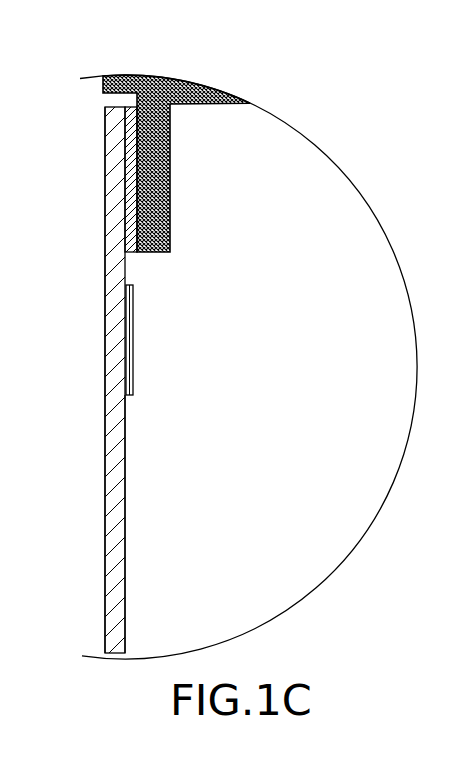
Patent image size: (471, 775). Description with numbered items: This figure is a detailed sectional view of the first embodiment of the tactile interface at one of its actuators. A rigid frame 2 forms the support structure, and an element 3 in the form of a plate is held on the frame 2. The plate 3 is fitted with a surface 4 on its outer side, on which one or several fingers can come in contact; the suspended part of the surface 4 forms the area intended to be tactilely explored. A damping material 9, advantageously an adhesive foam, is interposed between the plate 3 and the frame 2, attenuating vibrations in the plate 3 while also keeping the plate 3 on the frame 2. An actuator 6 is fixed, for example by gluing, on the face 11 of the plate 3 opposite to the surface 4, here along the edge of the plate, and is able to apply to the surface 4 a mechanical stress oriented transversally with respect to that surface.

The frame 2 is at (200, 82).
The element 3 is at (125, 477).
The surface 4 is at (107, 180).
The actuator 6 is at (133, 320).
The damping material 9 is at (127, 148).
The face 11 is at (125, 425).